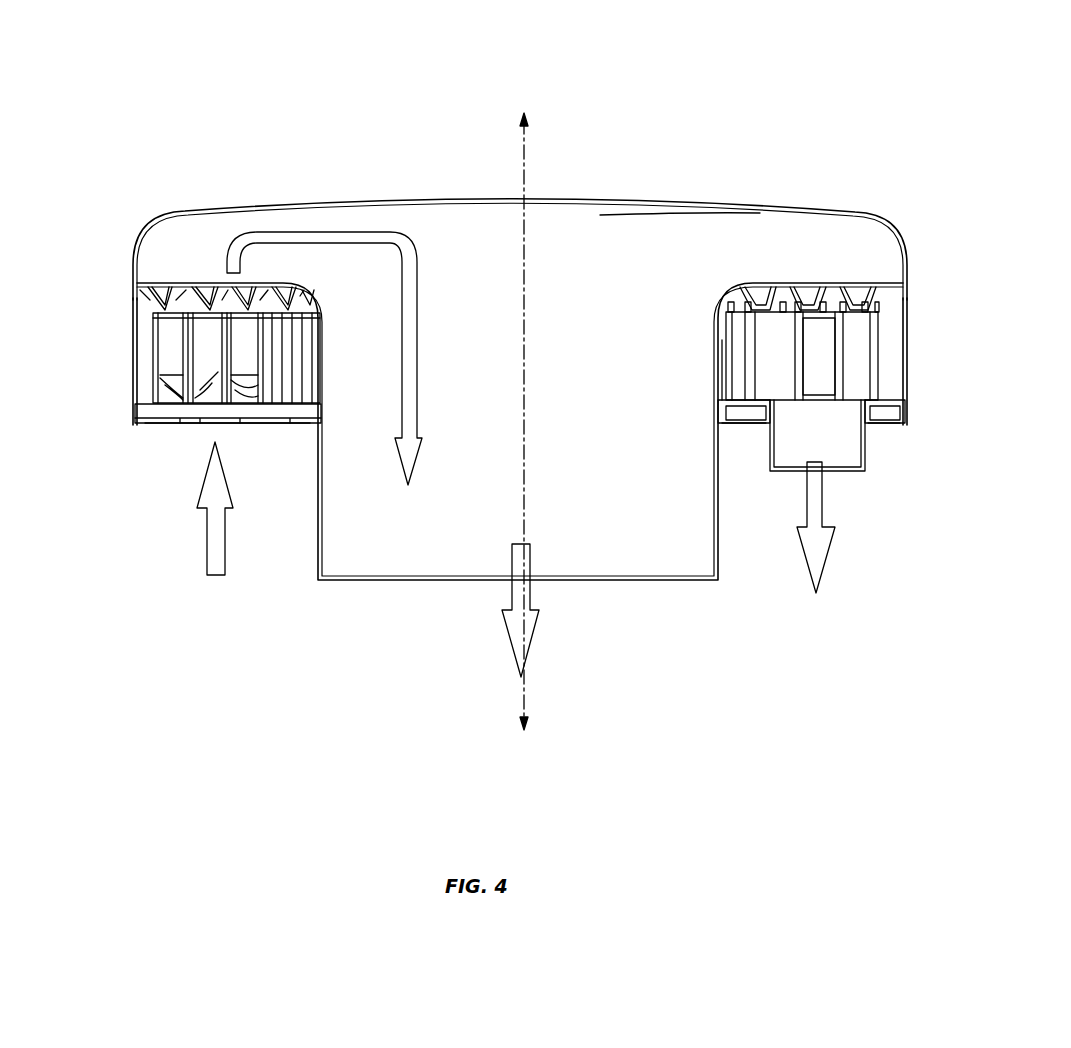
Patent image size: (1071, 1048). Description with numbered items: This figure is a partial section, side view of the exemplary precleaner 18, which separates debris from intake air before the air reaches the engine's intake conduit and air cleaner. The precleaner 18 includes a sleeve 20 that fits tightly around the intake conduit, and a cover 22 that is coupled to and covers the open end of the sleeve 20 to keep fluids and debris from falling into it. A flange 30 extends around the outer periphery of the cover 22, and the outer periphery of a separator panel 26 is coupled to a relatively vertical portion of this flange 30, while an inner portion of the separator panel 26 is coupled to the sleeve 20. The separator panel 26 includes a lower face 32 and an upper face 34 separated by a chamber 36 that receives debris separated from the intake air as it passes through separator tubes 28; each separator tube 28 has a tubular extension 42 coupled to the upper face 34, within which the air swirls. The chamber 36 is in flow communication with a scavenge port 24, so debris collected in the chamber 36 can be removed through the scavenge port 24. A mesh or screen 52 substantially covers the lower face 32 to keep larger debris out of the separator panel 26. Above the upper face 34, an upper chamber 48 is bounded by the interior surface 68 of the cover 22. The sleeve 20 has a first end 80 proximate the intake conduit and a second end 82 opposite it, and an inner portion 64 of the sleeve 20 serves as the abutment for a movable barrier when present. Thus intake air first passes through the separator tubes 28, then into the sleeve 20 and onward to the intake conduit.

The precleaner 18 is at (620, 89).
The sleeve 20 is at (318, 566).
The cover 22 is at (752, 204).
The scavenge port 24 is at (862, 466).
The separator panel 26 is at (151, 362).
The separator tubes 28 is at (782, 335).
The flange 30 is at (132, 340).
The lower face 32 is at (150, 410).
The upper face 34 is at (207, 313).
The chamber 36 is at (174, 328).
The tubular extension 42 is at (835, 372).
The upper chamber 48 is at (568, 239).
The screen 52 is at (170, 425).
The inner portion 64 is at (333, 500).
The interior surface 68 is at (653, 208).
The first end 80 is at (714, 556).
The second end 82 is at (707, 348).